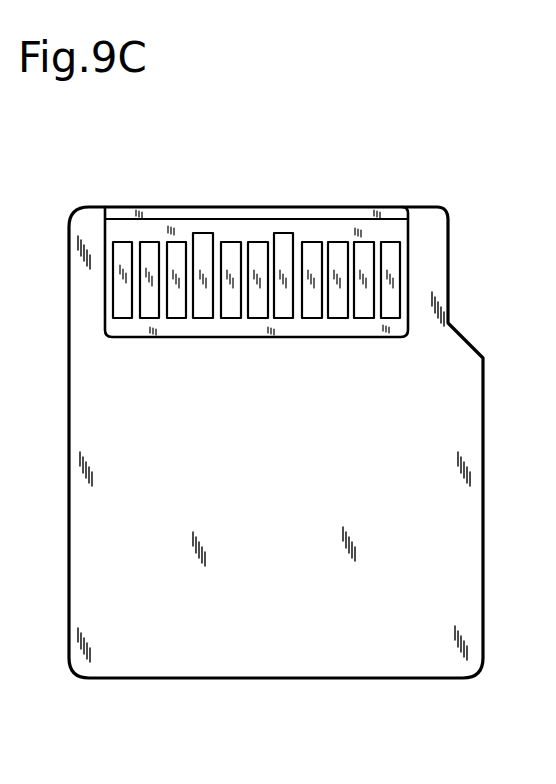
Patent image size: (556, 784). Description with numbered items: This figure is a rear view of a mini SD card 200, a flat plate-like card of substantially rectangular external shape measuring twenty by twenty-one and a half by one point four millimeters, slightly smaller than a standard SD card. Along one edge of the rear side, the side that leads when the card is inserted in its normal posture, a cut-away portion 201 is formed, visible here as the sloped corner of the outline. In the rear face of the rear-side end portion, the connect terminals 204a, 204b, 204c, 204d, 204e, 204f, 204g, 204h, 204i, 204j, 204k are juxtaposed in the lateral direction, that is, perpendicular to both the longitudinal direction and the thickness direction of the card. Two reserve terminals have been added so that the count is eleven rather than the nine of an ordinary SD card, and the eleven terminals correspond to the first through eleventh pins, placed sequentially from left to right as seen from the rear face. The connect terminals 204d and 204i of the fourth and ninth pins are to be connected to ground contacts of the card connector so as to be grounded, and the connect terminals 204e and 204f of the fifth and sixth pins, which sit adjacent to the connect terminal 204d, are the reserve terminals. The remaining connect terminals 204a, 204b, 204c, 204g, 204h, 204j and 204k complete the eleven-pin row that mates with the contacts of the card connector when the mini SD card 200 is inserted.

The mini SD card 200 is at (308, 542).
The cut-away portion 201 is at (453, 288).
The connect terminal 204a is at (122, 250).
The connect terminal 204b is at (150, 308).
The connect terminal 204c is at (172, 250).
The connect terminal 204d is at (205, 308).
The connect terminal 204e is at (232, 250).
The connect terminal 204f is at (258, 308).
The connect terminal 204g is at (283, 242).
The connect terminal 204h is at (313, 308).
The connect terminal 204i is at (338, 250).
The connect terminal 204j is at (363, 308).
The connect terminal 204k is at (392, 250).